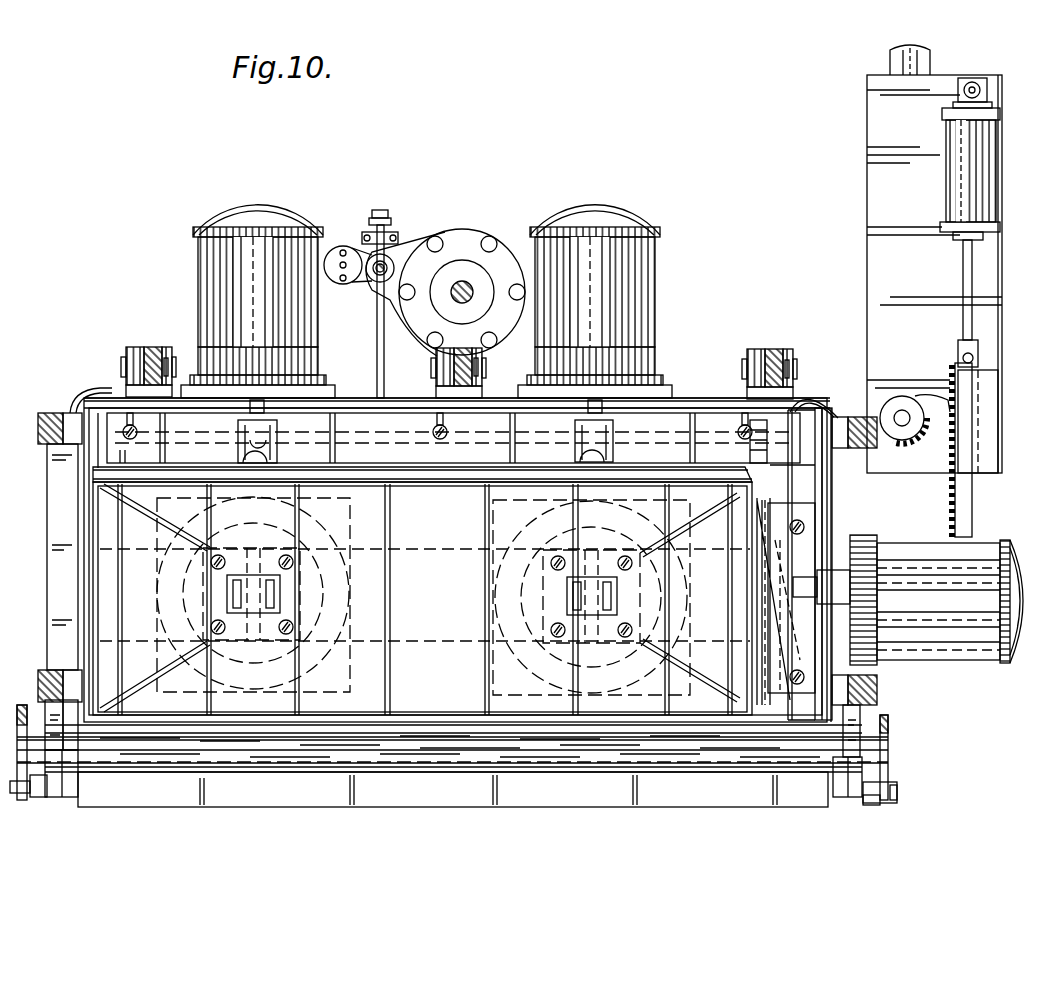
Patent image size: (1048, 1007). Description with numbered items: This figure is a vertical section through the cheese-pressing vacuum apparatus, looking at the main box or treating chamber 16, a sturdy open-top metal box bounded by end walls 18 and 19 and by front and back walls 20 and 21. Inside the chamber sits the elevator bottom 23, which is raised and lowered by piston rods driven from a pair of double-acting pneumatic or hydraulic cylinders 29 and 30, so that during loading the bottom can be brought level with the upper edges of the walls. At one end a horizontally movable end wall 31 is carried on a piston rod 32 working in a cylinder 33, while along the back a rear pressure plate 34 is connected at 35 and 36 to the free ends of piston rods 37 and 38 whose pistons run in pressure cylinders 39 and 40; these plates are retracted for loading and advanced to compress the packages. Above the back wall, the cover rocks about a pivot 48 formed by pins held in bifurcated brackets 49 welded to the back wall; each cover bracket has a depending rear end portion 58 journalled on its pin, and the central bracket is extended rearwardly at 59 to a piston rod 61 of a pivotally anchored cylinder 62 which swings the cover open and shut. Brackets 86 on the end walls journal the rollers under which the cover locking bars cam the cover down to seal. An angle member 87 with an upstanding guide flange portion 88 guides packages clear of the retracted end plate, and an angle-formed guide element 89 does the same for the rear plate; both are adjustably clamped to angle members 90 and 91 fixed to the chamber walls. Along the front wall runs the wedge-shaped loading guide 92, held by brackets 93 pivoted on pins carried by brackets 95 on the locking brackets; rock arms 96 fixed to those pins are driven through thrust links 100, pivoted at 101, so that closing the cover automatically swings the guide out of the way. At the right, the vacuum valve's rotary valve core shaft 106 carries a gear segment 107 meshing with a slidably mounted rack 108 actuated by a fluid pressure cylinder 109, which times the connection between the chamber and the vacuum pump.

The main box or treating chamber 16 is at (74, 541).
The end wall 18 is at (80, 490).
The end wall 19 is at (830, 500).
The front wall 20 is at (398, 728).
The back wall 21 is at (680, 398).
The elevator bottom 23 is at (120, 575).
The pneumatic or hydraulic cylinder 29 is at (500, 537).
The pneumatic or hydraulic cylinder 30 is at (372, 524).
The horizontally movable end wall 31 is at (755, 537).
The piston rod 32 is at (820, 562).
The pneumatic or hydraulic cylinder 33 is at (940, 635).
The rear pressure plate 34 is at (470, 484).
The connection 35 is at (640, 438).
The connection 36 is at (260, 450).
The piston rod 37 is at (600, 404).
The piston rod 38 is at (265, 404).
The pressure cylinder 39 is at (620, 265).
The pressure cylinder 40 is at (197, 253).
The pivot 48 is at (792, 372).
The bifurcated brackets 49 is at (752, 358).
The depending rear end portion 58 is at (768, 350).
The rearward extension 59 is at (440, 390).
The piston rod 61 is at (470, 283).
The pneumatic or hydraulic cylinder 62 is at (455, 235).
The brackets 86 is at (878, 692).
The angle member 87 is at (777, 513).
The upstanding guide flange portion 88 is at (762, 625).
The angle-formed guide element 89 is at (758, 455).
The angle member 90 is at (800, 466).
The angle member 91 is at (792, 420).
The loading guide 92 is at (485, 795).
The brackets 93 is at (843, 800).
The brackets 95 is at (860, 717).
The rock arms 96 is at (880, 800).
The thrust links 100 is at (890, 745).
The pivot connection 101 is at (900, 788).
The rotary valve core shaft 106 is at (904, 416).
The gear segment 107 is at (942, 398).
The rack 108 is at (972, 497).
The fluid pressure cylinder 109 is at (868, 150).